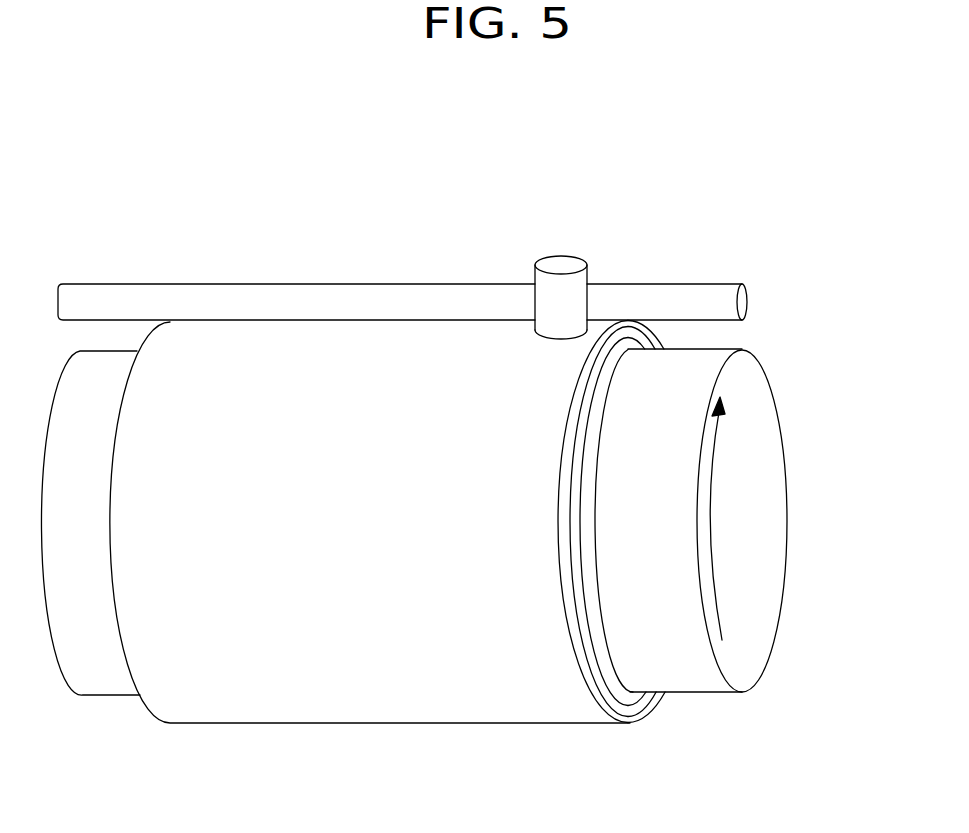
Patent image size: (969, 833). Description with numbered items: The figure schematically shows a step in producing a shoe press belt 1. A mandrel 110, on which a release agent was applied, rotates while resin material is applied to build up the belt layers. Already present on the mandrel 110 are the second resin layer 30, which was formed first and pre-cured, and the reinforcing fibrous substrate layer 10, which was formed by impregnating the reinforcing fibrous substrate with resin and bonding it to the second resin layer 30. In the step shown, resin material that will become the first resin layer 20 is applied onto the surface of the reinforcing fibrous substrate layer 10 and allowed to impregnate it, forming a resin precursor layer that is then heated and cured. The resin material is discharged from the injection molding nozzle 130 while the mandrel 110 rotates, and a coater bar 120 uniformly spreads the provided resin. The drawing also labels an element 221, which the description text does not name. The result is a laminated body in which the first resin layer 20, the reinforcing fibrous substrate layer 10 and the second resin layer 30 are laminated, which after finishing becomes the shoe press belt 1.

The shoe press belt 1 is at (280, 380).
The reinforcing fibrous substrate layer 10 is at (612, 715).
The first resin layer 20 is at (584, 668).
The second resin layer 30 is at (648, 697).
The mandrel 110 is at (762, 513).
The coater bar 120 is at (748, 298).
The injection molding nozzle 130 is at (561, 262).
The housing body 221 is at (310, 723).